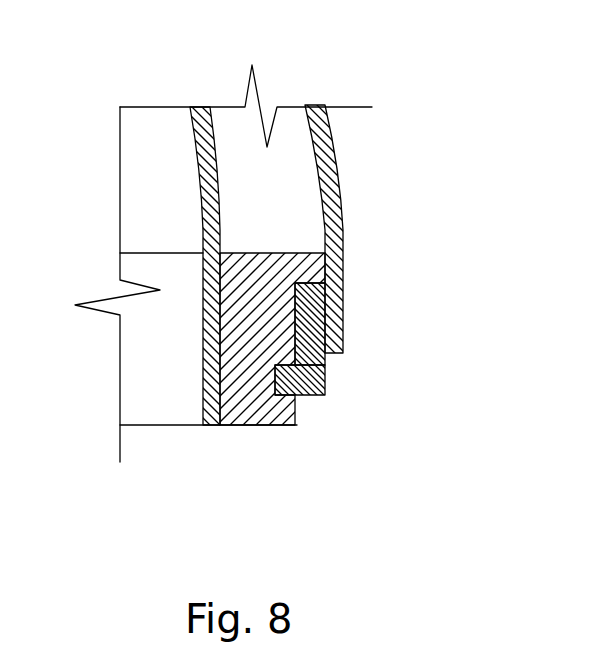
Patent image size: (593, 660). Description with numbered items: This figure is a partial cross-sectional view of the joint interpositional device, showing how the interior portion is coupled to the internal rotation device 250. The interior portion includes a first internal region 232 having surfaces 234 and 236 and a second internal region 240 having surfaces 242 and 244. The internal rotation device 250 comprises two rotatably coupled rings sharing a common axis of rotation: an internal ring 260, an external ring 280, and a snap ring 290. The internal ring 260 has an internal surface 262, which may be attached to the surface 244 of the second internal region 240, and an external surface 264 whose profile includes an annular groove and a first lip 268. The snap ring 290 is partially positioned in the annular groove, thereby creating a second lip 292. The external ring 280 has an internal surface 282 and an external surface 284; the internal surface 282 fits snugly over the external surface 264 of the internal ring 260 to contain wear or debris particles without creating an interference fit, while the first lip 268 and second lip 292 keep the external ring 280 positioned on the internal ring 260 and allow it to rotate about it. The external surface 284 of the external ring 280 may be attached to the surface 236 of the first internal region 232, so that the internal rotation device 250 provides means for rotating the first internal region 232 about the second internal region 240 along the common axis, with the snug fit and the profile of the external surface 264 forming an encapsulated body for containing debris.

The first internal region 232 is at (333, 140).
The surface 234 is at (343, 170).
The surface 236 is at (322, 190).
The second internal region 240 is at (217, 153).
The surface 242 is at (192, 128).
The surface 244 is at (220, 203).
The internal rotation device 250 is at (167, 476).
The internal ring 260 is at (240, 322).
The internal surface 262 is at (225, 404).
The external surface 264 is at (313, 330).
The first lip 268 is at (342, 272).
The external ring 280 is at (343, 322).
The internal surface 282 is at (543, 298).
The external surface 284 is at (342, 347).
The snap ring 290 is at (328, 390).
The second lip 292 is at (312, 397).